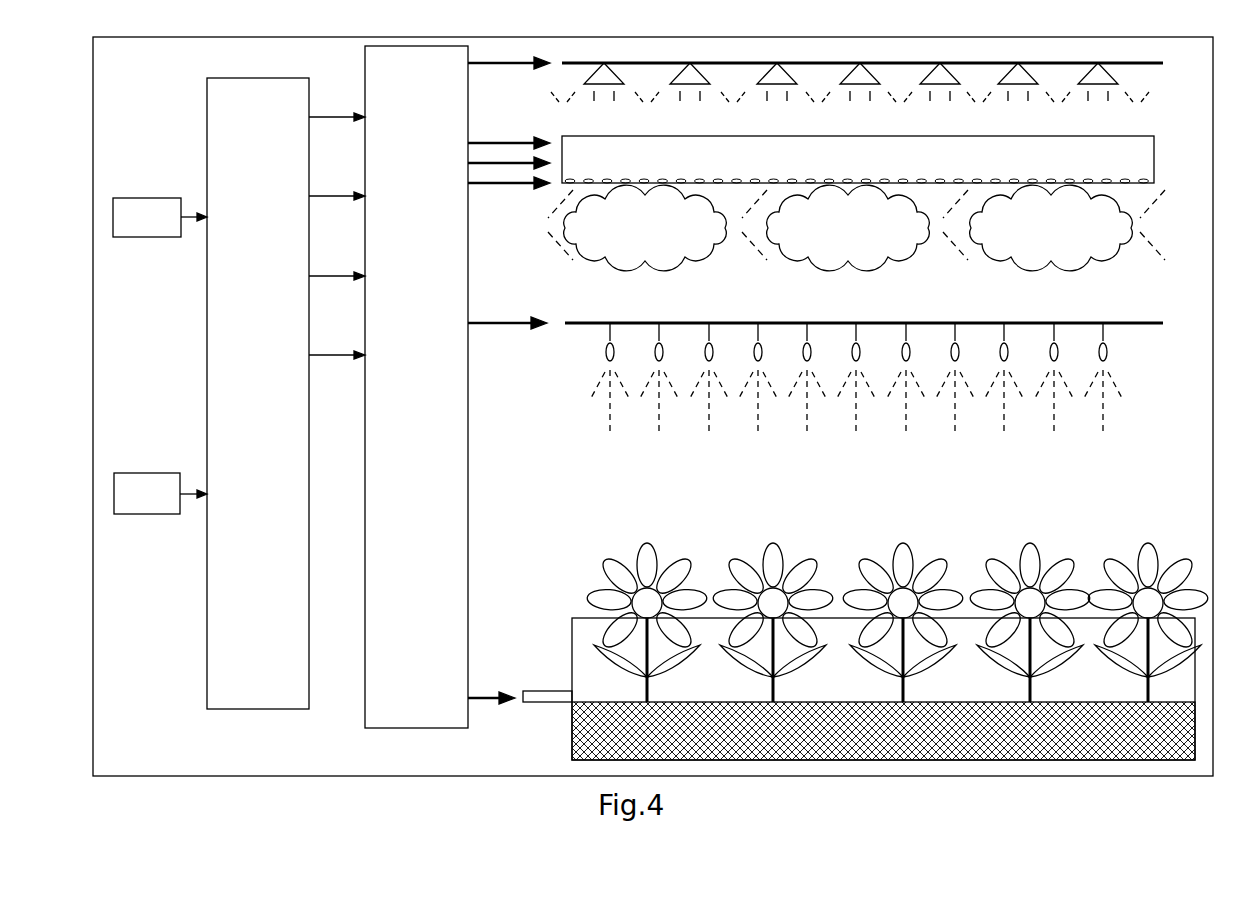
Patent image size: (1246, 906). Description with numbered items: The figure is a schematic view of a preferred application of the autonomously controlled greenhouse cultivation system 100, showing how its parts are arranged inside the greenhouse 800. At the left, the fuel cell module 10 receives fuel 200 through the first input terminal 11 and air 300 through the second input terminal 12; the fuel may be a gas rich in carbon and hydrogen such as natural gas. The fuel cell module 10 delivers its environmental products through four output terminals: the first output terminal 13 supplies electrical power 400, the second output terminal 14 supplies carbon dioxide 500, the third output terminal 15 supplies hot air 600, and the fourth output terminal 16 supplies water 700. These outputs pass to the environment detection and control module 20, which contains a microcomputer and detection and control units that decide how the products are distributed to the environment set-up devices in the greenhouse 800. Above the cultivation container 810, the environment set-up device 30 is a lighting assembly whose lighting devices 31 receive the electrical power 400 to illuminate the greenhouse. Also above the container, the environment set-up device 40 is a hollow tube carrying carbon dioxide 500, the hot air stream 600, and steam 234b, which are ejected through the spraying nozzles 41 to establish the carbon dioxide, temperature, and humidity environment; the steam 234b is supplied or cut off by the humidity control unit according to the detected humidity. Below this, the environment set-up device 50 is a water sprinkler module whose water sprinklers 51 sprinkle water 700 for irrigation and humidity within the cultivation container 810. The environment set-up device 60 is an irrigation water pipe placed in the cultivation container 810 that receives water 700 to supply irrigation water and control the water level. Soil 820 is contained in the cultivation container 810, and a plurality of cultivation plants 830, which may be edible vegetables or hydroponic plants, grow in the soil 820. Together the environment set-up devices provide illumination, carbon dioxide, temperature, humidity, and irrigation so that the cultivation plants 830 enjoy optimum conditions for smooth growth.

The autonomously controlled greenhouse cultivation system 100 is at (165, 659).
The greenhouse 800 is at (692, 36).
The fuel cell module 10 is at (238, 78).
The first input terminal 11 is at (191, 216).
The second input terminal 12 is at (191, 493).
The first output terminal 13 is at (337, 116).
The second output terminal 14 is at (337, 195).
The third output terminal 15 is at (337, 275).
The fourth output terminal 16 is at (337, 354).
The environment detection and control module 20 is at (410, 728).
The fuel 200 is at (155, 198).
The air 300 is at (150, 473).
The electrical power 400 is at (497, 66).
The carbon dioxide 500 is at (483, 142).
The hot air 600 is at (540, 162).
The steam 234b is at (508, 186).
The water 700 is at (495, 326).
The environment set-up device 30 is at (1163, 63).
The lighting devices 31 is at (1100, 62).
The environment set-up device 40 is at (1154, 155).
The spraying nozzles 41 is at (1150, 183).
The environment set-up device 50 is at (1163, 323).
The water sprinklers 51 is at (606, 352).
The environment set-up device 60 is at (536, 703).
The cultivation container 810 is at (572, 630).
The soil 820 is at (585, 740).
The cultivation plants 830 is at (645, 556).